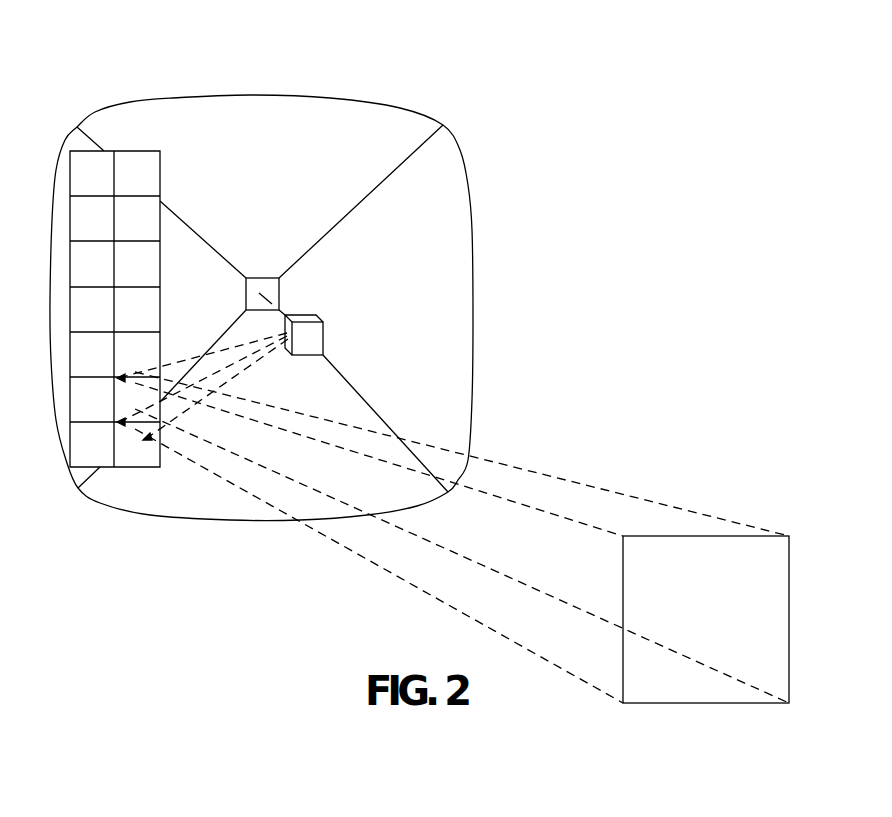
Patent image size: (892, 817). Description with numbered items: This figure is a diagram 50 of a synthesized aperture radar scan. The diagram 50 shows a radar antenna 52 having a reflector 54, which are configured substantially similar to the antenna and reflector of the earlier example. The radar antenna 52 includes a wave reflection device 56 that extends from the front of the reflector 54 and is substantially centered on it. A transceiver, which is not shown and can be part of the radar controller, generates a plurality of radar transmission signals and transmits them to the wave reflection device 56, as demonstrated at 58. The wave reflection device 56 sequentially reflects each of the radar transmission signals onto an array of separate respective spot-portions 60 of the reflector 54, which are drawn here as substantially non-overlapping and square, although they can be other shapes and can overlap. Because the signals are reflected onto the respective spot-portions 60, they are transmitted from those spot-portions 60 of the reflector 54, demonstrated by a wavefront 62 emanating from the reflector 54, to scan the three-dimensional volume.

The diagram 50 is at (85, 58).
The radar antenna 52 is at (493, 128).
The reflector 54 is at (472, 227).
The wave reflection device 56 is at (326, 325).
The radar transmission signals 58 is at (280, 310).
The spot-portions 60 is at (81, 182).
The wavefront 62 is at (789, 595).